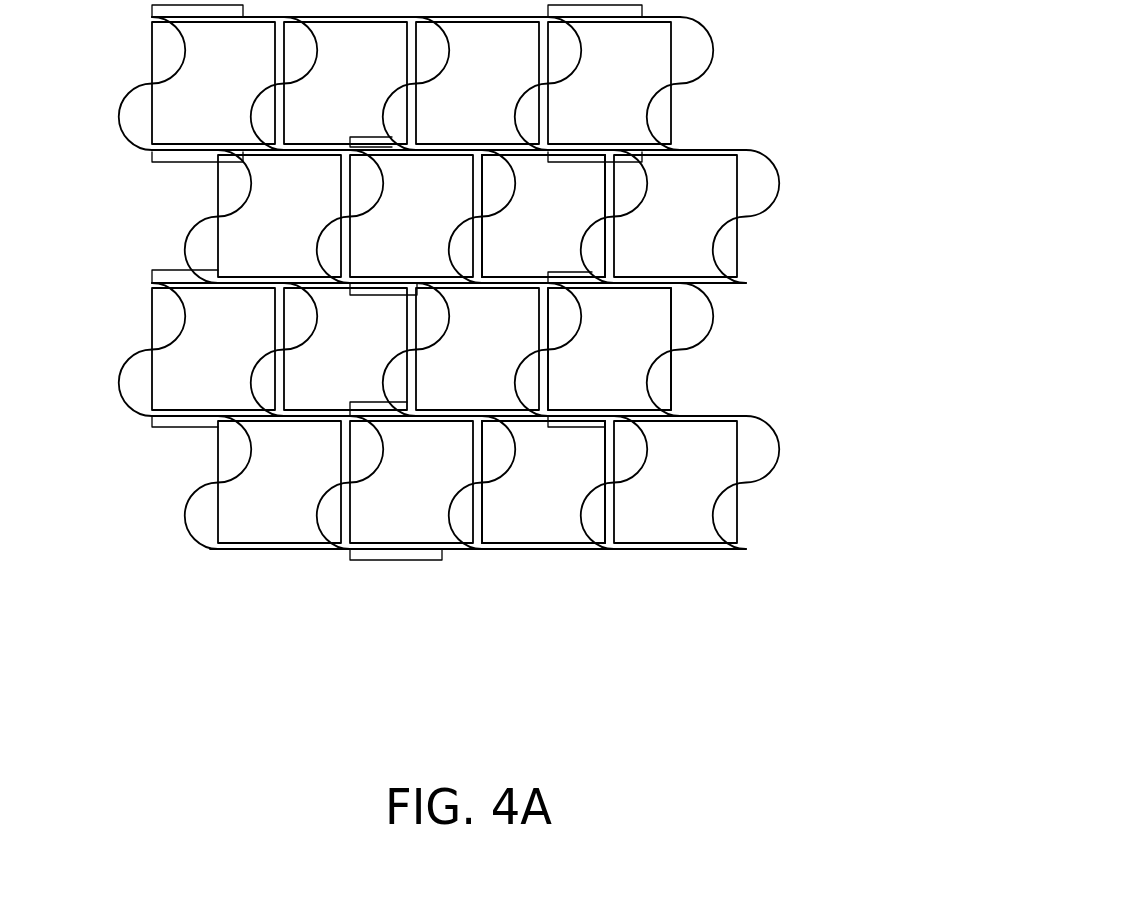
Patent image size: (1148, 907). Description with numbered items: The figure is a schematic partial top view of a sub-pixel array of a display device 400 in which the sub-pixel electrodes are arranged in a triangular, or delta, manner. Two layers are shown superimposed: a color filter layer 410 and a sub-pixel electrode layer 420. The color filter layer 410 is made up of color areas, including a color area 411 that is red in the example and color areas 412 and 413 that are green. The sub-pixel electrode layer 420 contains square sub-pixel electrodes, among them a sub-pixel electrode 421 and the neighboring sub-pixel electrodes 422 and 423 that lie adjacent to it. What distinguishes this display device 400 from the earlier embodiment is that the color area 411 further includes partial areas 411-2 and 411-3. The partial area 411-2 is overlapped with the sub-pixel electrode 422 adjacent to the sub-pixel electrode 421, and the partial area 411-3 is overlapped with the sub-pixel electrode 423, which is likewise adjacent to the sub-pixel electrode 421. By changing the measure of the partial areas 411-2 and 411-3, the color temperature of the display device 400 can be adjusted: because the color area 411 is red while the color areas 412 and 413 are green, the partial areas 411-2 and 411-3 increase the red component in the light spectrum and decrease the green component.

The display device 400 is at (510, 319).
The color filter layer 410 is at (793, 442).
The color area 411 is at (714, 320).
The partial area 411-2 is at (568, 273).
The partial area 411-3 is at (568, 427).
The color area 412 is at (593, 196).
The color area 413 is at (568, 520).
The sub-pixel electrode layer 420 is at (749, 507).
The sub-pixel electrode 421 is at (673, 380).
The sub-pixel electrode 422 is at (593, 177).
The sub-pixel electrode 423 is at (547, 530).